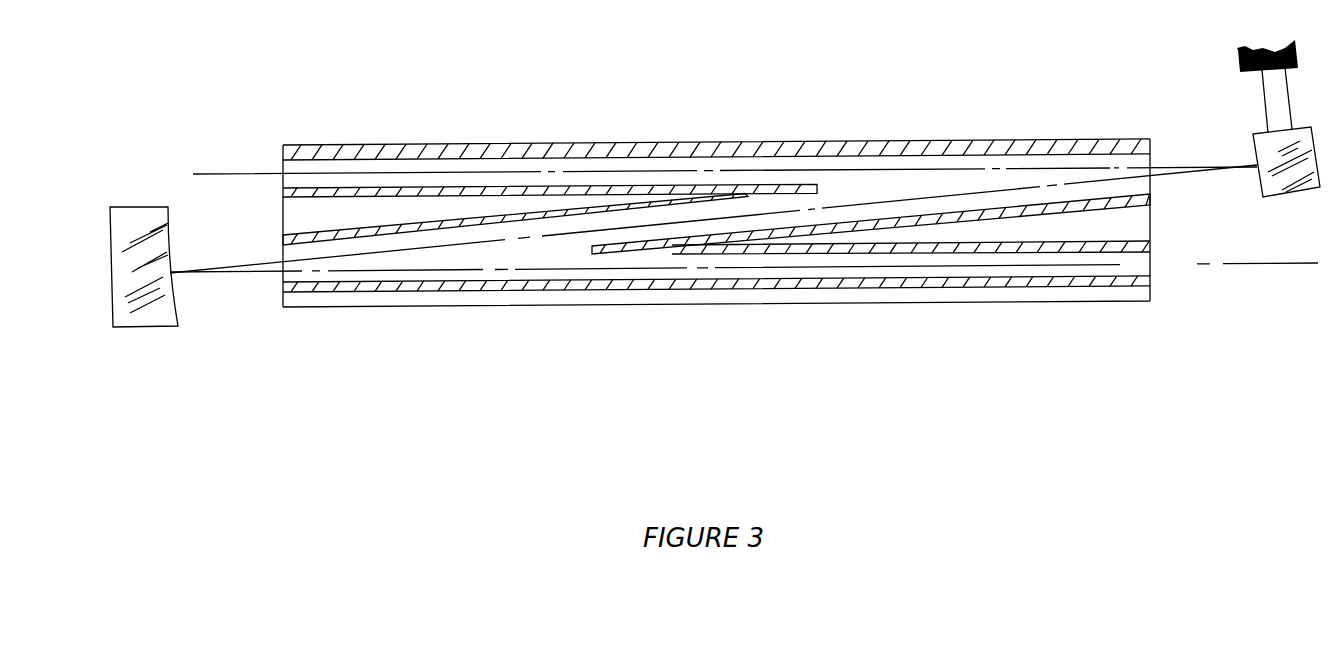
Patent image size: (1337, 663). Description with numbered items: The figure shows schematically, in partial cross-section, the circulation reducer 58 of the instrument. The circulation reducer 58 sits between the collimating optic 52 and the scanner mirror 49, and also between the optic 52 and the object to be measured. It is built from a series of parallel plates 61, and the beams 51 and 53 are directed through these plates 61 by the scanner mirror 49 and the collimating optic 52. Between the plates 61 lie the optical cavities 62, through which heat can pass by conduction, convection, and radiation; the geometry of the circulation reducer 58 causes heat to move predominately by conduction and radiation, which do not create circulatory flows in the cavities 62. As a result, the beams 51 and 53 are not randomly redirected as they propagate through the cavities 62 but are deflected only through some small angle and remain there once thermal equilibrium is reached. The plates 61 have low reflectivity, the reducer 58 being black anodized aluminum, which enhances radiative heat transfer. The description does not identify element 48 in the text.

The input beam axis 48 is at (243, 165).
The scanner mirror 49 is at (1249, 126).
The beam 51 is at (262, 253).
The collimating optic 52 is at (156, 332).
The measuring beam 53 is at (909, 276).
The circulation reducer 58 is at (648, 140).
The parallel plates 61 is at (1140, 204).
The cavities 62 is at (707, 284).